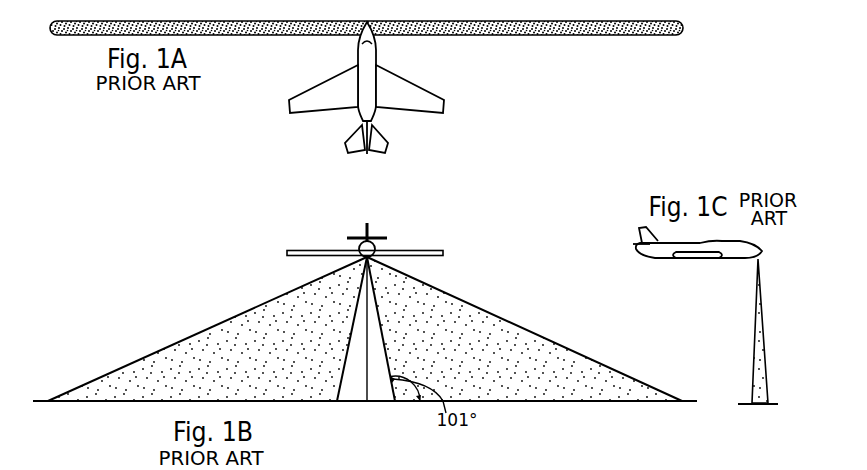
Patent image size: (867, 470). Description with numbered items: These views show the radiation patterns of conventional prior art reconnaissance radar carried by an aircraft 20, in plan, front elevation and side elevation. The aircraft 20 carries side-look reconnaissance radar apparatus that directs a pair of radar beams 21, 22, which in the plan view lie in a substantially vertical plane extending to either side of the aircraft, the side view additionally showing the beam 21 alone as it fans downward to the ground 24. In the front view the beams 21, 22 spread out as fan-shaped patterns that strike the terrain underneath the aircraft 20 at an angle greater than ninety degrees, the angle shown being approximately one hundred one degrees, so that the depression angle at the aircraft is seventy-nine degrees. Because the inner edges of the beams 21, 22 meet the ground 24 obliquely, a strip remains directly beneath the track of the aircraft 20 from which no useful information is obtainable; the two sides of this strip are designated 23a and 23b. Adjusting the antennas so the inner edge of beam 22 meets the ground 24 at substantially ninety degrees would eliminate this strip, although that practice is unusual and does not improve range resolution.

In FIG. 1A, the aircraft 20 is at (405, 80).
In FIG. 1B, the aircraft 20 is at (359, 252).
In FIG. 1C, the aircraft 20 is at (722, 260).
In FIG. 1A, the radar beam 21 is at (499, 22).
In FIG. 1B, the radar beam 21 is at (231, 318).
In FIG. 1C, the radar beam 21 is at (753, 365).
In FIG. 1A, the radar beam 22 is at (188, 21).
In FIG. 1B, the radar beam 22 is at (529, 330).
In FIG. 1B, the side of strip 23a is at (349, 404).
In FIG. 1B, the side of strip 23b is at (381, 404).
In FIG. 1B, the ground 24 is at (585, 404).